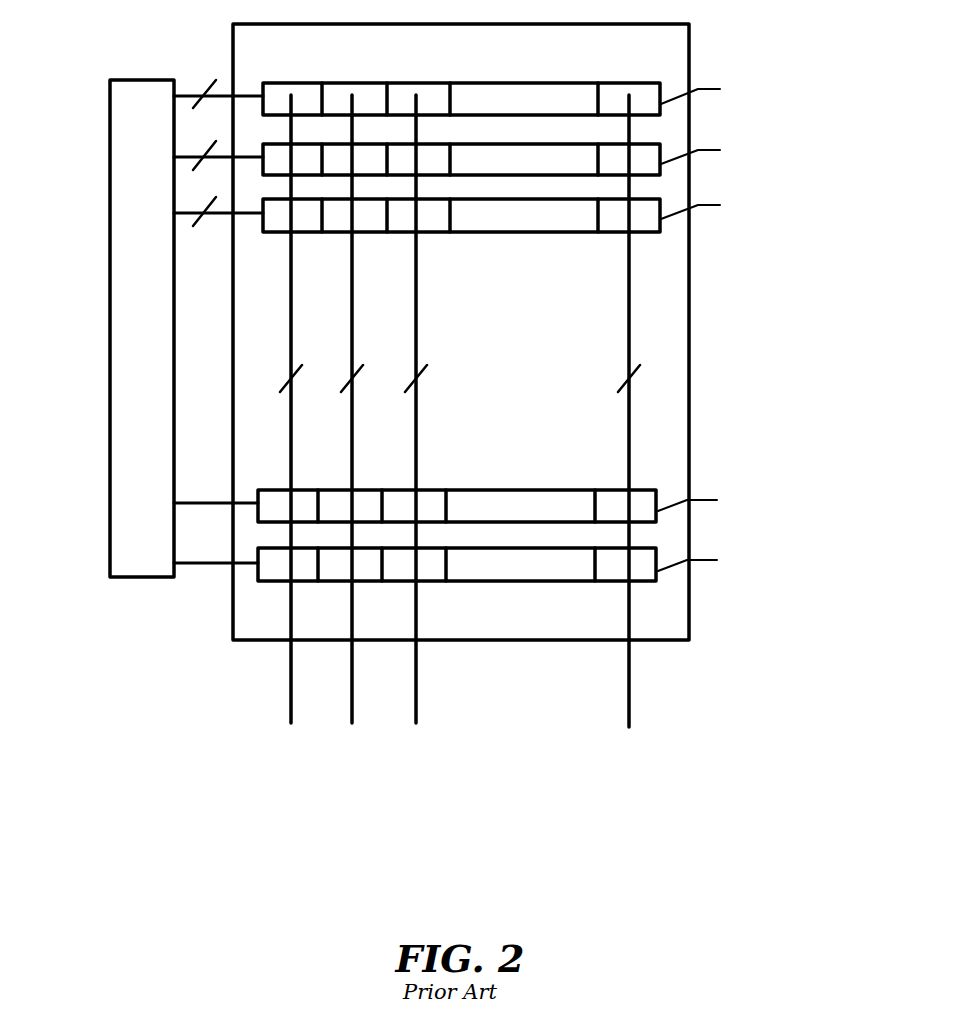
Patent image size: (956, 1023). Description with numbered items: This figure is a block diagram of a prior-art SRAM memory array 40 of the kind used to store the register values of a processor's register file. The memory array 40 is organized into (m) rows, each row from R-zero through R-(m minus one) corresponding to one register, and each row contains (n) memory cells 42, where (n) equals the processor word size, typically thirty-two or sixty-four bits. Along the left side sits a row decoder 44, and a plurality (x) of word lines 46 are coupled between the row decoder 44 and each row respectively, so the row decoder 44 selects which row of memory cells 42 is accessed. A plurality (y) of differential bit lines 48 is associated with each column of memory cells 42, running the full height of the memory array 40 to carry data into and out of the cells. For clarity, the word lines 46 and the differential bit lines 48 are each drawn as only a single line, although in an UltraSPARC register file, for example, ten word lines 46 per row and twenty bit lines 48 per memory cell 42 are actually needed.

The memory array 40 is at (199, 674).
The memory cell 42 is at (275, 82).
The row decoder 44 is at (131, 580).
The word lines 46 is at (188, 94).
The differential bit lines 48 is at (289, 702).